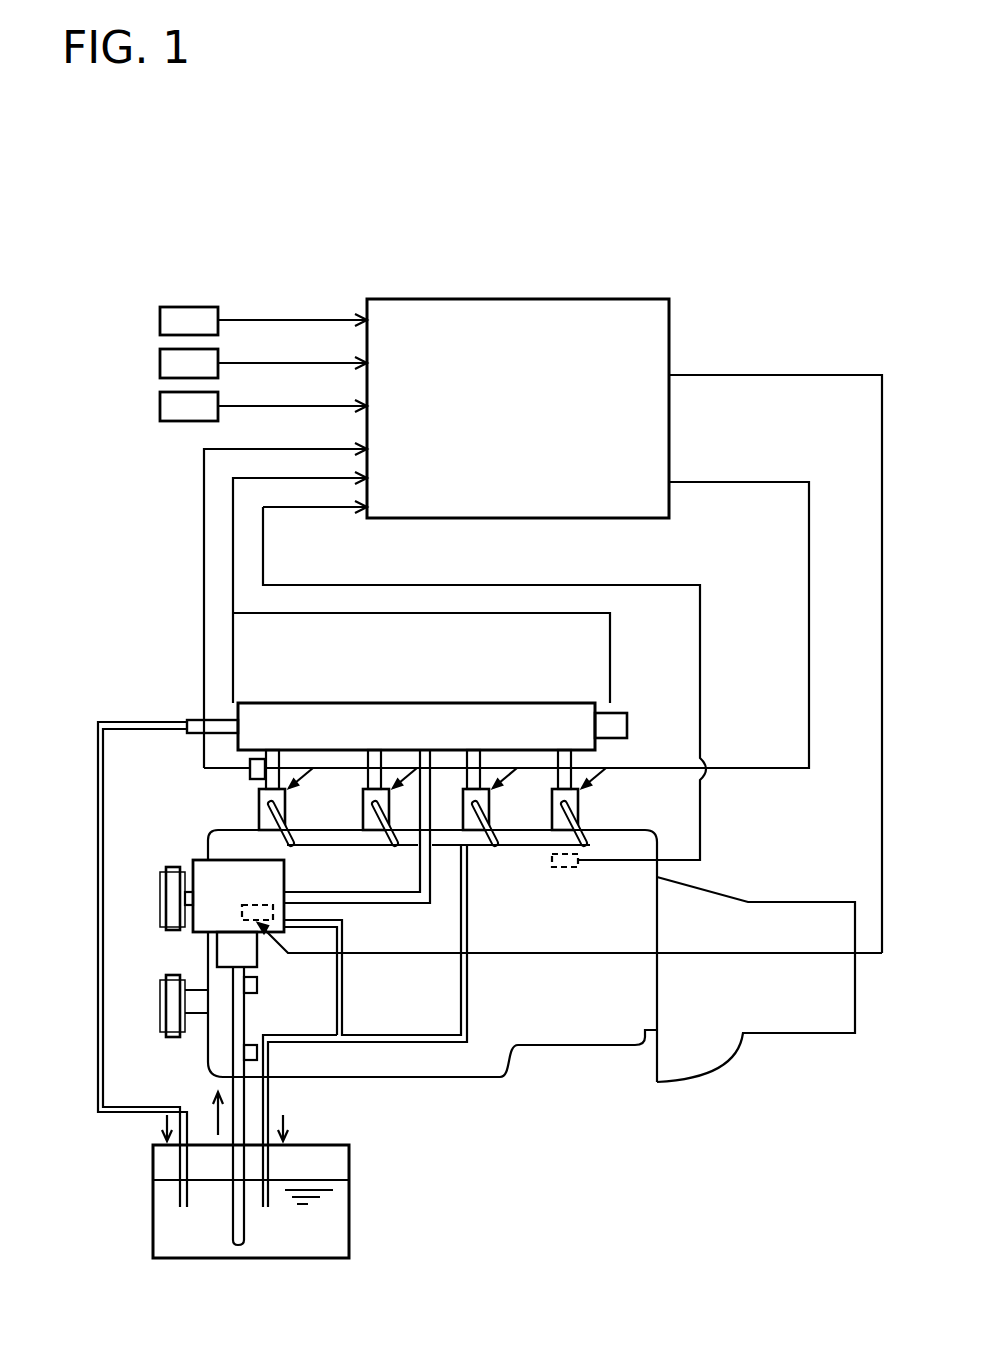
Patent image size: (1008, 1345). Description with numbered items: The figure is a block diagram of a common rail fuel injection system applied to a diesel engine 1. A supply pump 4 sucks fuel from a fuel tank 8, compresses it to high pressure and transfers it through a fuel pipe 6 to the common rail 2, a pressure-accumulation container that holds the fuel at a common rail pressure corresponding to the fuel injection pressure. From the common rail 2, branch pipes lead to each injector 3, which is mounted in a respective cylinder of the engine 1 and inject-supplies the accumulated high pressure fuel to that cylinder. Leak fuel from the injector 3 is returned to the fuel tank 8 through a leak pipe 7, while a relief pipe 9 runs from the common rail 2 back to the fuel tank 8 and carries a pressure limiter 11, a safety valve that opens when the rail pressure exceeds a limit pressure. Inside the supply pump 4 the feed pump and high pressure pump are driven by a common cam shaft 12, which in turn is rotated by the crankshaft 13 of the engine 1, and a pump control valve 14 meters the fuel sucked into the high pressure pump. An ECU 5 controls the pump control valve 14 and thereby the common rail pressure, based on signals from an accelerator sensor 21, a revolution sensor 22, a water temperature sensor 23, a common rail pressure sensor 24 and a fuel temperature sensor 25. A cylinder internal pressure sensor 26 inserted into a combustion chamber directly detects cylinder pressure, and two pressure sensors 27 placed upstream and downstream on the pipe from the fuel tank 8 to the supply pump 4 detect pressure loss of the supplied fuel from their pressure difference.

The engine 1 is at (508, 1060).
The common rail 2 is at (447, 700).
The injector 3 is at (263, 806).
The supply pump 4 is at (200, 860).
The ECU 5 is at (517, 298).
The fuel pipe 6 is at (392, 905).
The leak pipe 7 is at (470, 990).
The fuel tank 8 is at (350, 1226).
The relief pipe 9 is at (104, 1035).
The pressure limiter 11 is at (190, 719).
The cam shaft 12 is at (185, 880).
The crankshaft 13 is at (194, 1013).
The pump control valve (SCV) 14 is at (266, 903).
The accelerator sensor 21 is at (160, 320).
The revolution sensor 22 is at (160, 363).
The water temperature sensor 23 is at (160, 406).
The common rail pressure sensor 24 is at (629, 717).
The fuel temperature sensor 25 is at (250, 770).
The cylinder internal pressure sensor 26 is at (565, 867).
The pressure sensor 27 is at (258, 985).